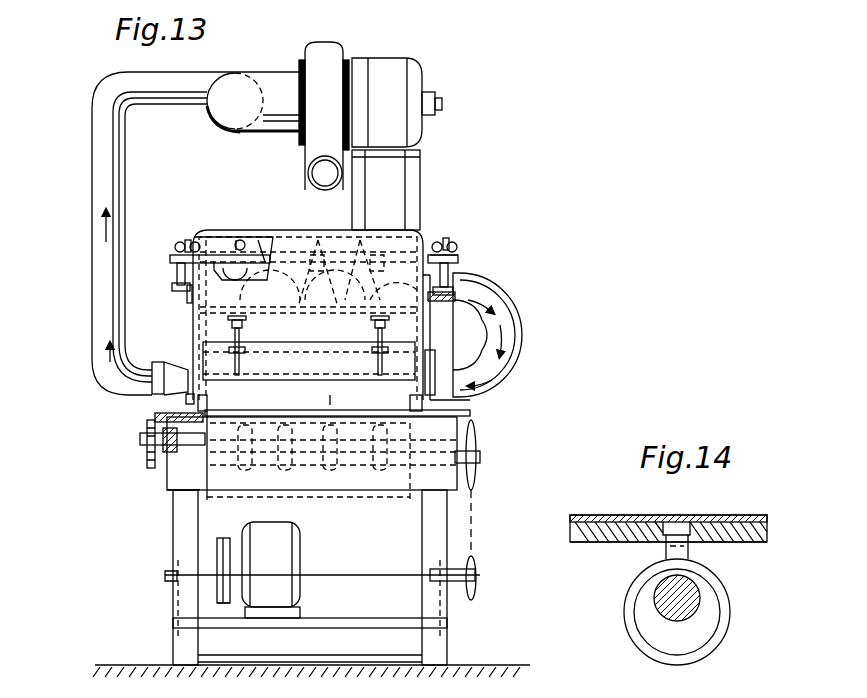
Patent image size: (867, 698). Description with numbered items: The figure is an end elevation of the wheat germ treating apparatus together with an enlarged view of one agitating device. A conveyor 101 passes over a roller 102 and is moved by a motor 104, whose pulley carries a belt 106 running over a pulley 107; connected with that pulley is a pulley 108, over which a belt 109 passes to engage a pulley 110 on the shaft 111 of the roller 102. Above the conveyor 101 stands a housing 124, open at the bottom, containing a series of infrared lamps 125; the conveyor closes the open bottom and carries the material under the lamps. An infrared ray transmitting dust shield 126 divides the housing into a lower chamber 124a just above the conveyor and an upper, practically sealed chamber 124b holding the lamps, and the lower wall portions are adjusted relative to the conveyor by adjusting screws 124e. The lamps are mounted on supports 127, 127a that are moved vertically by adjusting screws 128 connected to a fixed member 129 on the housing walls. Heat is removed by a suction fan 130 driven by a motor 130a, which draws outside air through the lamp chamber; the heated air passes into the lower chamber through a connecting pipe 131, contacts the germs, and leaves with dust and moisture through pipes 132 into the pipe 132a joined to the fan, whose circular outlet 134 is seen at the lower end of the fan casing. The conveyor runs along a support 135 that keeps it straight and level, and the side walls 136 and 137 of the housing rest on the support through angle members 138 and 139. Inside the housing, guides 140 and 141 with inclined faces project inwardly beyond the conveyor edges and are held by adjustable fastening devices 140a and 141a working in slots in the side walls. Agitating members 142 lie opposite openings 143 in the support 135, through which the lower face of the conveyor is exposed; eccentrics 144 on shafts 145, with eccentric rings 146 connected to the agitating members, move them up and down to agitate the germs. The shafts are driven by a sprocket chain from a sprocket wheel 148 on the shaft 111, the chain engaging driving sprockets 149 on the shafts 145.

In FIG. 13, the conveyor 101 is at (258, 418).
In FIG. 14, the conveyor 101 is at (615, 515).
In FIG. 13, the roller 102 is at (198, 492).
In FIG. 13, the motor 104 is at (300, 550).
In FIG. 13, the belt 106 is at (225, 605).
In FIG. 13, the pulley 107 is at (217, 596).
In FIG. 13, the pulley 108 is at (476, 590).
In FIG. 13, the belt 109 is at (473, 520).
In FIG. 13, the pulley 110 is at (476, 476).
In FIG. 13, the shaft 111 is at (140, 446).
In FIG. 13, the housing 124 is at (248, 232).
In FIG. 13, the chamber 124a is at (350, 400).
In FIG. 13, the chamber 124b is at (262, 238).
In FIG. 13, the adjusting screws 124e is at (372, 326).
In FIG. 13, the infrared lamps 125 is at (224, 280).
In FIG. 13, the dust shield 126 is at (280, 350).
In FIG. 13, the support 127 is at (225, 257).
In FIG. 13, the support 127a is at (450, 256).
In FIG. 13, the adjusting screws 128 is at (178, 240).
In FIG. 13, the fixed member 129 is at (190, 296).
In FIG. 13, the suction fan 130 is at (323, 48).
In FIG. 13, the motor 130a is at (410, 80).
In FIG. 13, the connecting pipe 131 is at (512, 340).
In FIG. 13, the pipes 132 is at (92, 194).
In FIG. 13, the pipe 132a is at (215, 125).
In FIG. 13, the tube opening 134 is at (308, 171).
In FIG. 13, the support 135 is at (470, 414).
In FIG. 14, the support 135 is at (586, 543).
In FIG. 13, the side wall 136 is at (426, 323).
In FIG. 13, the side wall 137 is at (204, 320).
In FIG. 13, the angle member 138 is at (186, 400).
In FIG. 13, the angle member 139 is at (445, 401).
In FIG. 13, the guide 140 is at (208, 402).
In FIG. 13, the adjustable fastening device 140a is at (190, 386).
In FIG. 13, the guide 141 is at (410, 406).
In FIG. 13, the adjustable fastening device 141a is at (432, 390).
In FIG. 13, the agitating members 142 is at (362, 452).
In FIG. 14, the agitating members 142 is at (690, 548).
In FIG. 14, the openings 143 is at (678, 521).
In FIG. 13, the eccentrics 144 is at (310, 442).
In FIG. 14, the eccentrics 144 is at (710, 619).
In FIG. 13, the shafts 145 is at (163, 438).
In FIG. 14, the shafts 145 is at (659, 601).
In FIG. 14, the eccentric rings 146 is at (722, 650).
In FIG. 13, the sprocket wheel 148 is at (147, 466).
In FIG. 13, the driving sprockets 149 is at (155, 417).